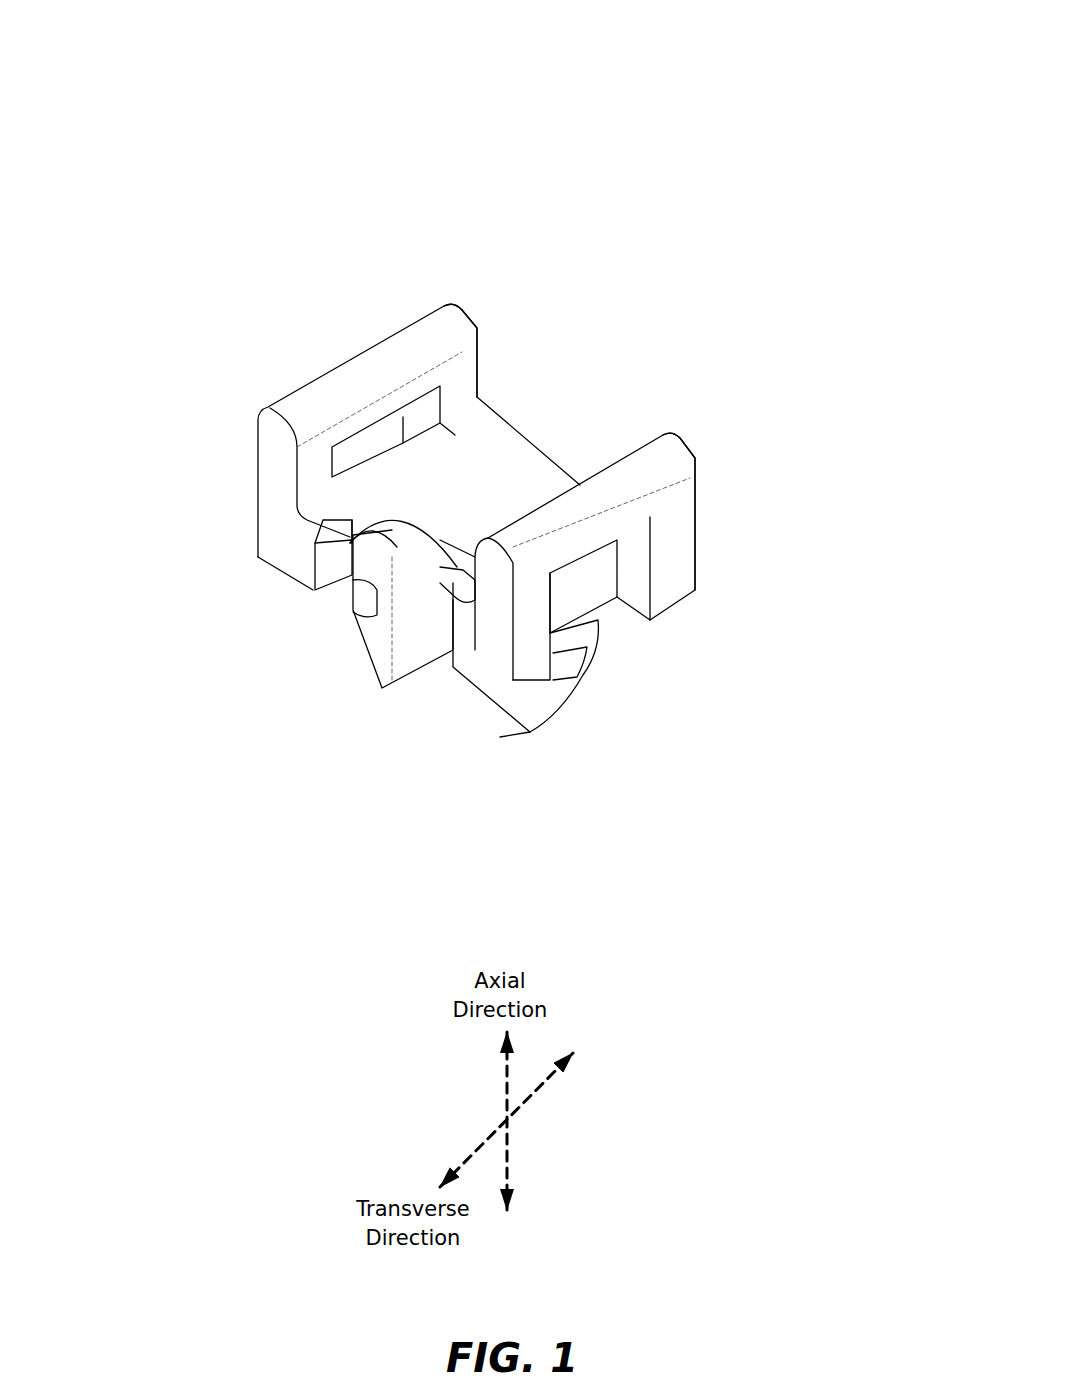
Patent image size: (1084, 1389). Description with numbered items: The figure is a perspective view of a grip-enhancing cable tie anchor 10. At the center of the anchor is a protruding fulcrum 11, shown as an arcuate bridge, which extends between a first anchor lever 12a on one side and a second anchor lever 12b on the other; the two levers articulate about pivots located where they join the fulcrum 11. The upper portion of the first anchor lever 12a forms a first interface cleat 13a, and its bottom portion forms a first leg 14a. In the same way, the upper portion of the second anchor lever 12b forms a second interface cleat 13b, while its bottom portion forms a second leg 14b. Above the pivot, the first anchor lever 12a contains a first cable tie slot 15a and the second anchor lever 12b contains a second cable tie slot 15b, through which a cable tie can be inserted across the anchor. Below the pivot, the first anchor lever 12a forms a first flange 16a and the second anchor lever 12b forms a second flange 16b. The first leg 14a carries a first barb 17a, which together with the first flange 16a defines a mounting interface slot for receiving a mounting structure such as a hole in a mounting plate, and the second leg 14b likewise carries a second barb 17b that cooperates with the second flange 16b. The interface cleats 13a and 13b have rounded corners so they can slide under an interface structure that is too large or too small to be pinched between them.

The grip-enhancing cable tie anchor 10 is at (802, 140).
The fulcrum 11 is at (508, 476).
The first anchor lever 12a is at (236, 485).
The second anchor lever 12b is at (708, 563).
The first interface cleat 13a is at (478, 300).
The second interface cleat 13b is at (700, 437).
The first leg 14a is at (370, 710).
The second leg 14b is at (535, 778).
The first cable tie slot 15a is at (368, 440).
The second cable tie slot 15b is at (593, 578).
The first flange 16a is at (278, 583).
The second flange 16b is at (457, 690).
The first barb 17a is at (342, 640).
The second barb 17b is at (598, 680).